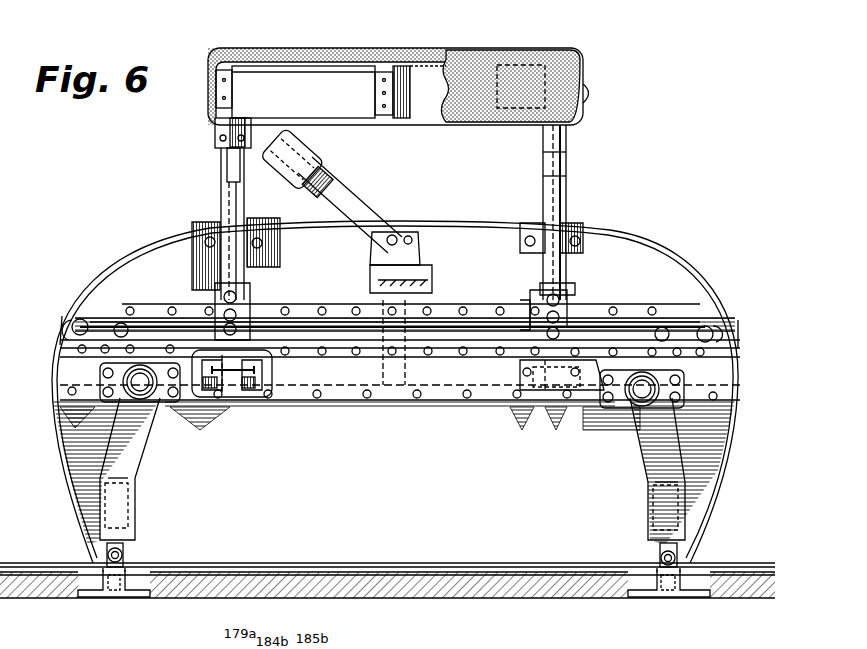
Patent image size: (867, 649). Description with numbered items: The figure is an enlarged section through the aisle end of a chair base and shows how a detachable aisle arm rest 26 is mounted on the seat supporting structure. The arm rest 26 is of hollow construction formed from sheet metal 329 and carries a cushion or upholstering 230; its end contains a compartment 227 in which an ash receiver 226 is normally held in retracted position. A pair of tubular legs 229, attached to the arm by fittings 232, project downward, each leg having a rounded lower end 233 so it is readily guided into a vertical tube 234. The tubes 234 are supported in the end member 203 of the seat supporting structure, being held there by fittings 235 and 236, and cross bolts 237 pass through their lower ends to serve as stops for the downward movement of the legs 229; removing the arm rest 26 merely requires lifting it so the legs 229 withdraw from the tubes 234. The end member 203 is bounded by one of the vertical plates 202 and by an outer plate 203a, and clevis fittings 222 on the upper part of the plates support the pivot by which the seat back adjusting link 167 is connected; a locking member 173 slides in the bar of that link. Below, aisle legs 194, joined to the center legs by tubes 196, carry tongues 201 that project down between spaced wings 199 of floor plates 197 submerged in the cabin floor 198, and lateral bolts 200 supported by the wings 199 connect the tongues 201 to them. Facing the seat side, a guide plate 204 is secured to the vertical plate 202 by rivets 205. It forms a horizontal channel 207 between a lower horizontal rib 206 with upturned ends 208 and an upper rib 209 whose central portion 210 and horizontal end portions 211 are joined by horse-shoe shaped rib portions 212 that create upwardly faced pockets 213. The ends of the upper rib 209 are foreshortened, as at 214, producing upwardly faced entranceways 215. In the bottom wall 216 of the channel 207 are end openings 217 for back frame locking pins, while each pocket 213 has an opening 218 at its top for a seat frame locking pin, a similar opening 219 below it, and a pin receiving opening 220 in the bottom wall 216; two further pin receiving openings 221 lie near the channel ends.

The aisle arm rest 26 is at (592, 58).
The seat back adjusting link 167 is at (356, 188).
The locking member 173 is at (312, 192).
The aisle legs 194 is at (118, 500).
The tubes 196 is at (152, 396).
The floor plates 197 is at (120, 585).
The cabin floor 198 is at (66, 596).
The wings 199 is at (114, 575).
The lateral bolts 200 is at (105, 552).
The tongues 201 is at (126, 550).
The plates 202 is at (432, 243).
The end member 203 is at (671, 235).
The outer plate 203a is at (488, 533).
The guide plates 204 is at (625, 312).
The rivets 205 is at (518, 396).
The lower horizontal rib 206 is at (372, 345).
The horizontal channel 207 is at (462, 332).
The upturned ends 208 is at (70, 326).
The upper rib 209 is at (448, 322).
The central portion 210 is at (300, 318).
The horizontal end portions 211 is at (183, 304).
The horse-shoe shaped rib portions 212 is at (245, 296).
The pockets 213 is at (252, 300).
The foreshortened ends 214 is at (100, 318).
The entranceways 215 is at (86, 320).
The bottom wall 216 is at (635, 330).
The openings 217 is at (78, 318).
The opening 218 is at (567, 300).
The opening 219 is at (566, 310).
The pin receiving opening 220 is at (562, 336).
The pin receiving openings 221 is at (118, 323).
The clevis fittings 222 is at (450, 243).
The ash receivers 226 is at (590, 94).
The compartments 227 is at (524, 62).
The legs 229 is at (220, 168).
The cushion 230 is at (340, 47).
The fittings 232 is at (216, 126).
The rounded lower end 233 is at (238, 395).
The vertical tubes 234 is at (270, 264).
The fittings 235 is at (196, 226).
The fittings 236 is at (272, 378).
The cross bolts 237 is at (228, 396).
The sheet metal 329 is at (352, 80).